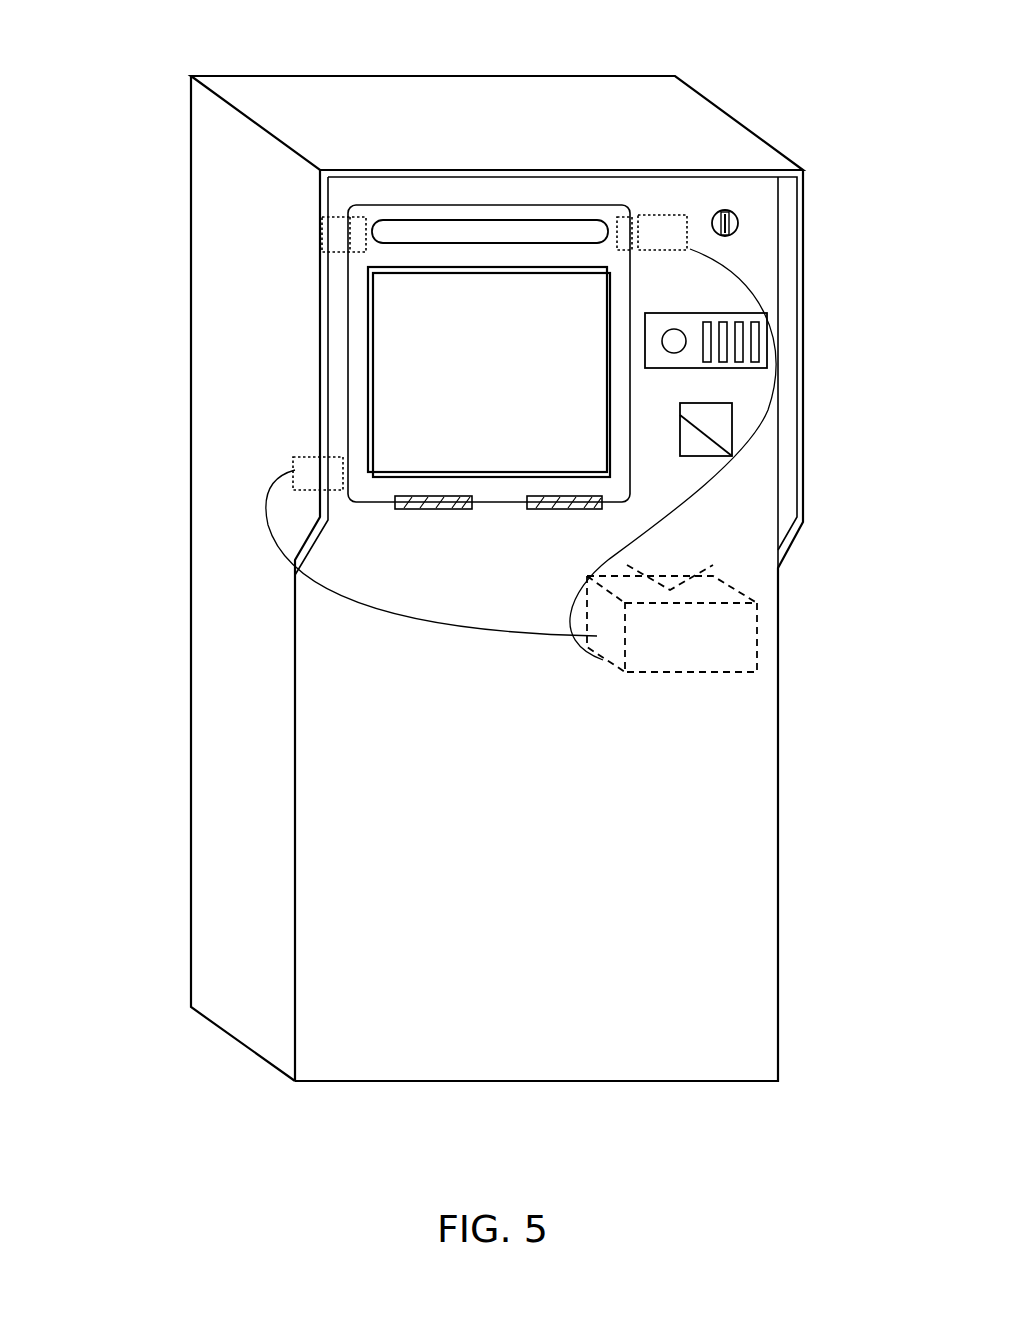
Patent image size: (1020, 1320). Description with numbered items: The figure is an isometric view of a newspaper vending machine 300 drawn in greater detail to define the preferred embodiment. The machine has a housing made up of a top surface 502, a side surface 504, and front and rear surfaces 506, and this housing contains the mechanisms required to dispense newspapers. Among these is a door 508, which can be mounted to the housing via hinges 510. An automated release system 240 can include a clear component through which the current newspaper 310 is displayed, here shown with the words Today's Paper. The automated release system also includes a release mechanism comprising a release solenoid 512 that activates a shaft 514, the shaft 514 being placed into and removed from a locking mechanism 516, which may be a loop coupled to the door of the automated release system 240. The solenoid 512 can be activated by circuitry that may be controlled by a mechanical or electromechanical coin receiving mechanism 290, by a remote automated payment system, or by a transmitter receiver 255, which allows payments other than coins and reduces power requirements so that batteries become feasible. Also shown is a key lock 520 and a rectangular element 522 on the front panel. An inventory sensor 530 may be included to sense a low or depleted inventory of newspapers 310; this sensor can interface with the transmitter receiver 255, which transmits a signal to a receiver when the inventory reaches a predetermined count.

The newspaper vending machine 300 is at (887, 1055).
The top surface 502 is at (385, 115).
The side surface 504 is at (250, 784).
The front and rear surfaces 506 is at (684, 898).
The door 508 is at (410, 233).
The hinges 510 is at (418, 513).
The release solenoid 512 is at (670, 233).
The shaft 514 is at (633, 237).
The locking mechanism 516 is at (622, 216).
The key lock 520 is at (735, 232).
The bill acceptor 522 is at (712, 424).
The automated release system 240 is at (358, 350).
The current newspaper 310 is at (400, 428).
The coin receiving mechanism 290 is at (705, 345).
The transmitter receiver 255 is at (698, 637).
The inventory sensor 530 is at (297, 447).